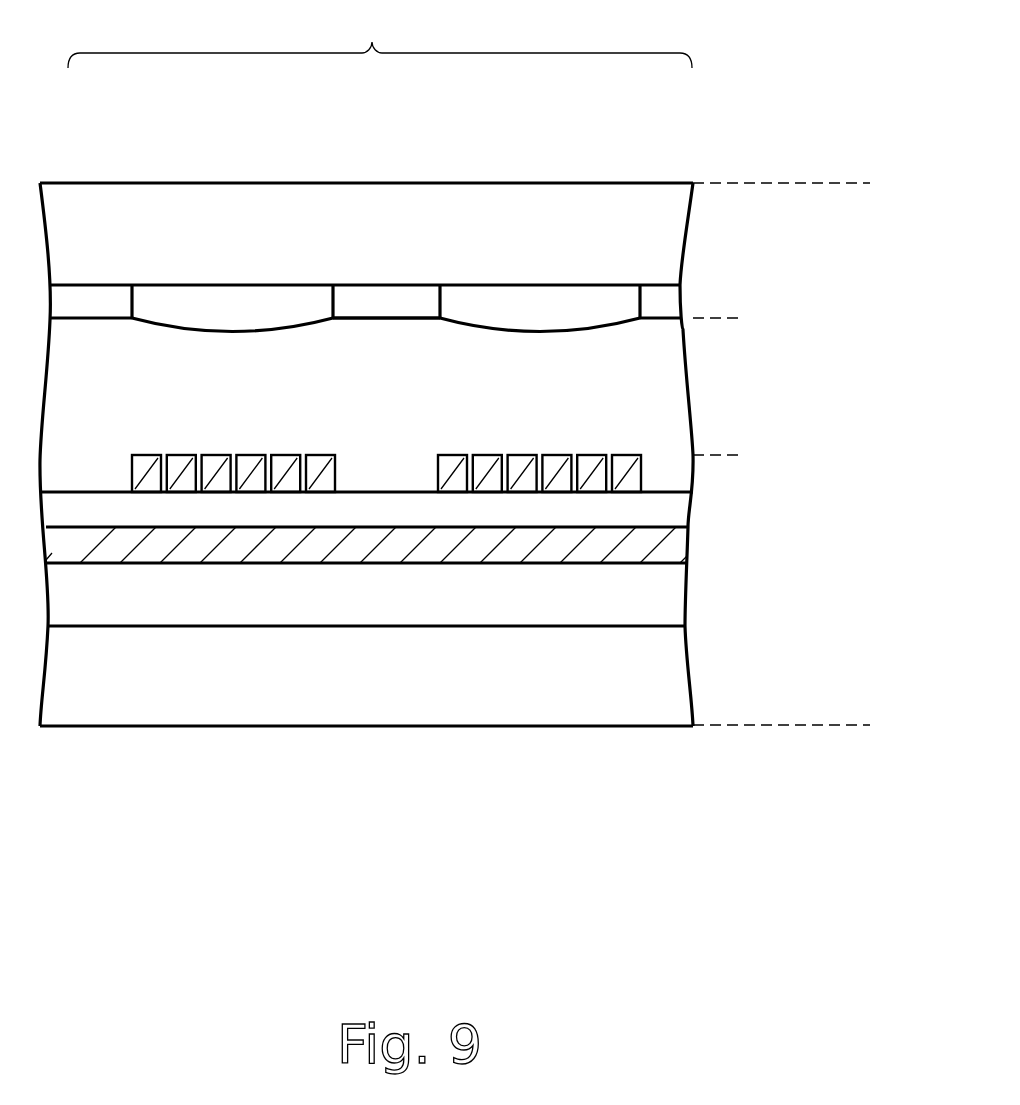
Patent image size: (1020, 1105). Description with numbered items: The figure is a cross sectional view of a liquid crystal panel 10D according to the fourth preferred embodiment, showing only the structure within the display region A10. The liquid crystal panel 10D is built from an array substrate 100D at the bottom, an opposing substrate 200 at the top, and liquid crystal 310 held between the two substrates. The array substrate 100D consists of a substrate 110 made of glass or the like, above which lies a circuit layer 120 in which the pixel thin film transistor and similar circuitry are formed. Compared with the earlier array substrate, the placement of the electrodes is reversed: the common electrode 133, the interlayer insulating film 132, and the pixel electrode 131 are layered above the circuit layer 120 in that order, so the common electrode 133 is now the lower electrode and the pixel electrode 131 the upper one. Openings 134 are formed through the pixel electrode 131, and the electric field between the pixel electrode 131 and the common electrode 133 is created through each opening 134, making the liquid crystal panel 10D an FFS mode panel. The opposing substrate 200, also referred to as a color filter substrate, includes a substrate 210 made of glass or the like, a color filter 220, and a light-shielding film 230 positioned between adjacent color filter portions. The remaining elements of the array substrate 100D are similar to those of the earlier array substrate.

The liquid crystal panel 10D is at (850, 725).
The array substrate 100D is at (740, 725).
The opposing substrate 200 is at (740, 183).
The substrate 210 is at (102, 235).
The color filter 220 is at (233, 310).
The light-shielding film 230 is at (380, 310).
The display region A10 is at (380, 36).
The liquid crystal 310 is at (645, 393).
The pixel electrode 131 is at (217, 487).
The interlayer insulating film 132 is at (380, 510).
The common electrode 133 is at (438, 545).
The opening 134 is at (166, 452).
The circuit layer 120 is at (250, 607).
The substrate 110 is at (112, 695).